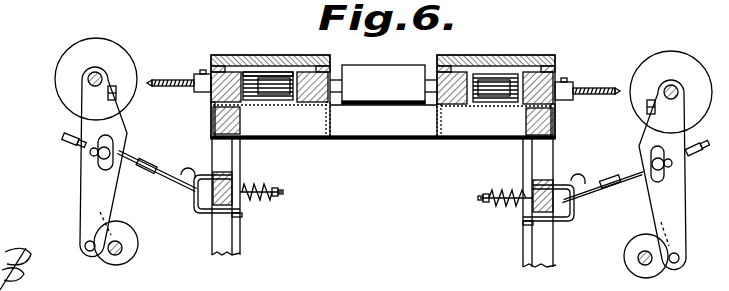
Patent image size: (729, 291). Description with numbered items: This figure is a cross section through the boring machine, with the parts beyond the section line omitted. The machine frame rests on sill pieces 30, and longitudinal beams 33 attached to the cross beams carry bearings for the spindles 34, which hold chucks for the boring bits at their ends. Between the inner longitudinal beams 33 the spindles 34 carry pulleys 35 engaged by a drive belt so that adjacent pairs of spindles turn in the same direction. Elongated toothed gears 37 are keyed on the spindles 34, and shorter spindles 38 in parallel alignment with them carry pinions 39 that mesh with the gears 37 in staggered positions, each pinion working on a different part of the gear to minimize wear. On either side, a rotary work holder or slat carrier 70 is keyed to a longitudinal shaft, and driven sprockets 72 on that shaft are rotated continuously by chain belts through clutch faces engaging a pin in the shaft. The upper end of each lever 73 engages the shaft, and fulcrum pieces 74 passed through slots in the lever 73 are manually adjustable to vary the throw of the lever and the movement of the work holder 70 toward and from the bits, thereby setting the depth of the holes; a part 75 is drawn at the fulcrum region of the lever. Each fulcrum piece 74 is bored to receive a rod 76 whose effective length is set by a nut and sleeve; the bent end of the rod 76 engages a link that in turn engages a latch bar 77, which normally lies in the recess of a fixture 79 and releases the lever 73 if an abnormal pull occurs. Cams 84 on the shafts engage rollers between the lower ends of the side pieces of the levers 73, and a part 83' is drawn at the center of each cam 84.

The sill pieces 30 is at (232, 247).
The longitudinal beams 33 is at (212, 72).
The spindles 34 is at (338, 82).
The pulleys 35 is at (389, 92).
The elongated toothed gears 37 is at (270, 72).
The shorter spindles 38 is at (241, 106).
The pinions 39 is at (245, 72).
The rotary work holder 70 is at (112, 55).
The driven sprockets 72 is at (87, 84).
The levers 73 is at (116, 128).
The fulcrum pieces 74 is at (99, 152).
The pin 75 is at (112, 157).
The rod 76 is at (162, 172).
The latch bar 77 is at (196, 213).
The fixture 79 is at (236, 215).
The cams 84 is at (124, 238).
The crank pin 83' is at (380, 266).